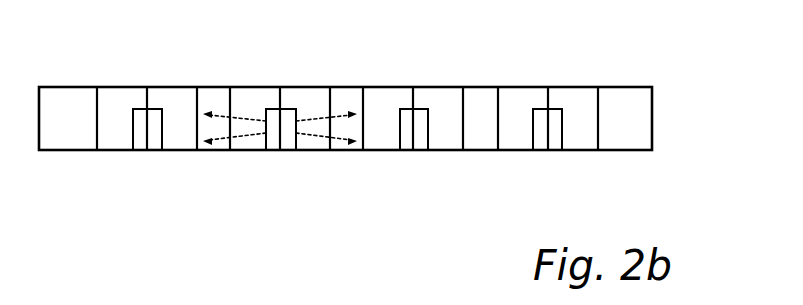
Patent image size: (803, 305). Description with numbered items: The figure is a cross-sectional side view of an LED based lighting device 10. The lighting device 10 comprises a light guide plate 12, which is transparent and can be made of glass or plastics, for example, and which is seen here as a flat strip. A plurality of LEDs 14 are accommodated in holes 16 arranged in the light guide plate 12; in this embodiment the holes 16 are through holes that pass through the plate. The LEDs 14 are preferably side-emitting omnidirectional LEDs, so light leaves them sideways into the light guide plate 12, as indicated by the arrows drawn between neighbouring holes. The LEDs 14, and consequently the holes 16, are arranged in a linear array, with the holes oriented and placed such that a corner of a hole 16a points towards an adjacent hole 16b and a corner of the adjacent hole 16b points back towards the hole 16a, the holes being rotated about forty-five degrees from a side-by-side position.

The lighting device 10 is at (393, 119).
The light guide plate 12 is at (653, 125).
The LEDs 14 is at (153, 145).
The holes 16 is at (115, 143).
The hole 16a is at (248, 143).
The adjacent hole 16b is at (380, 143).